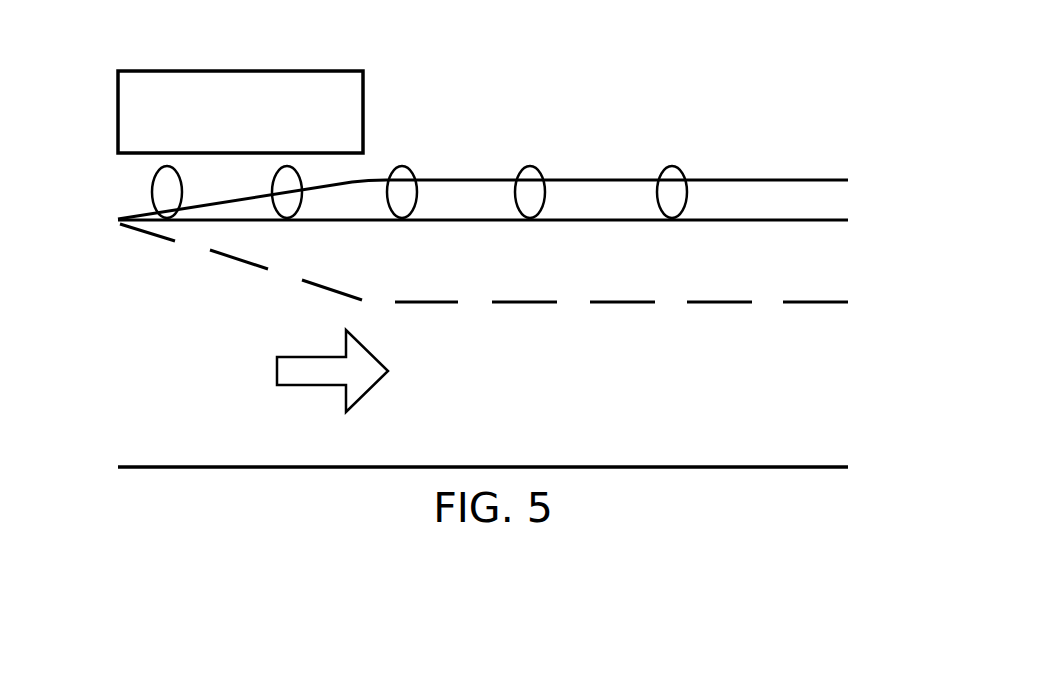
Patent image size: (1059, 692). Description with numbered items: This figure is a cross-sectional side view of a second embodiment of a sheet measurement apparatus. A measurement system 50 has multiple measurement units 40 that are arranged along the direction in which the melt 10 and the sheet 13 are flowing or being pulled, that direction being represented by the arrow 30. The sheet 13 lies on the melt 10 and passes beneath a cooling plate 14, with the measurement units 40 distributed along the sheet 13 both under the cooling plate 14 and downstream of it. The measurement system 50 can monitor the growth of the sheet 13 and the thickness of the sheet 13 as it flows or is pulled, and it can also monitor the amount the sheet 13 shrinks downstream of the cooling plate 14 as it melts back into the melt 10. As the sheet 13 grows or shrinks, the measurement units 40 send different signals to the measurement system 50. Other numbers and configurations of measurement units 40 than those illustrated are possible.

The melt 10 is at (540, 404).
The sheet 13 is at (715, 211).
The cooling plate 14 is at (322, 123).
The arrow 30 is at (332, 383).
The measurement units 40 is at (143, 202).
The measurement system 50 is at (605, 65).